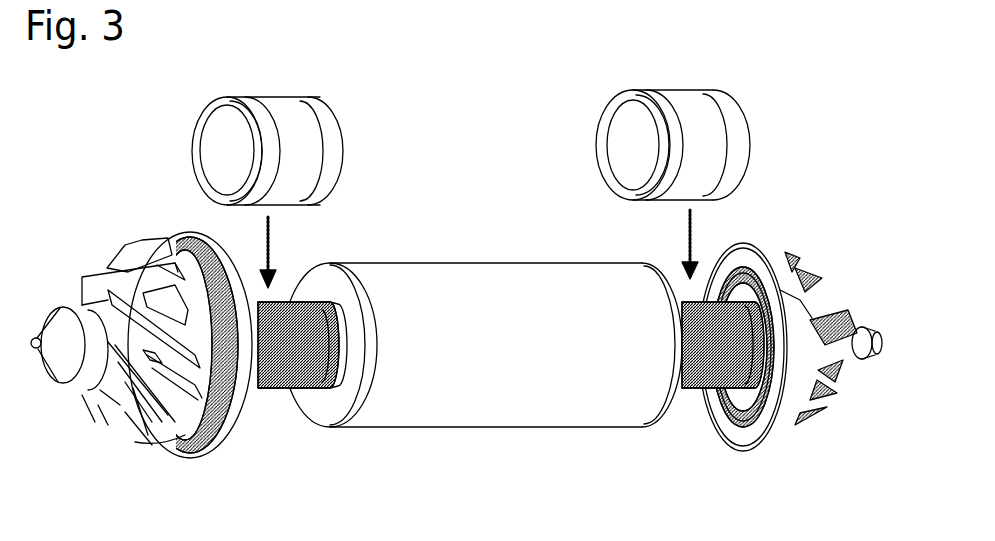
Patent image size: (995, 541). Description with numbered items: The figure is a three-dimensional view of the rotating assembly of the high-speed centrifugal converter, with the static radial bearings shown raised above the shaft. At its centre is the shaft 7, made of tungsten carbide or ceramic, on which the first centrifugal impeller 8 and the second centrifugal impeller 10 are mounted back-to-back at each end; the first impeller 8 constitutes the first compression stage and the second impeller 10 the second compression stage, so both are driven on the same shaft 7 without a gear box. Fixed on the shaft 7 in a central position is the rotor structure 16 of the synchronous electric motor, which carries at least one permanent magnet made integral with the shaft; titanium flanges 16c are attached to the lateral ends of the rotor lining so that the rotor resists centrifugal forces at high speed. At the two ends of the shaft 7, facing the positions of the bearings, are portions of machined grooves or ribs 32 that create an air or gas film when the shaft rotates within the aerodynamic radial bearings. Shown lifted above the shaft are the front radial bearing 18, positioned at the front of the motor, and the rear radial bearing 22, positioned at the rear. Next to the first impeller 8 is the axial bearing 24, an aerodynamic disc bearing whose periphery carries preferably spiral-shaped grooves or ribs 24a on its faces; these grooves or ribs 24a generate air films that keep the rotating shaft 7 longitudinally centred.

The shaft 7 is at (691, 446).
The first centrifugal impeller 8 is at (112, 422).
The second centrifugal impeller 10 is at (833, 377).
The rotor structure 16 is at (491, 242).
The titanium flanges 16c is at (318, 278).
The front radial bearing 18 is at (332, 120).
The rear radial bearing 22 is at (613, 110).
The axial bearing 24 is at (217, 433).
The grooves or ribs 24a is at (190, 241).
The second grooves or ribs 32 is at (270, 370).